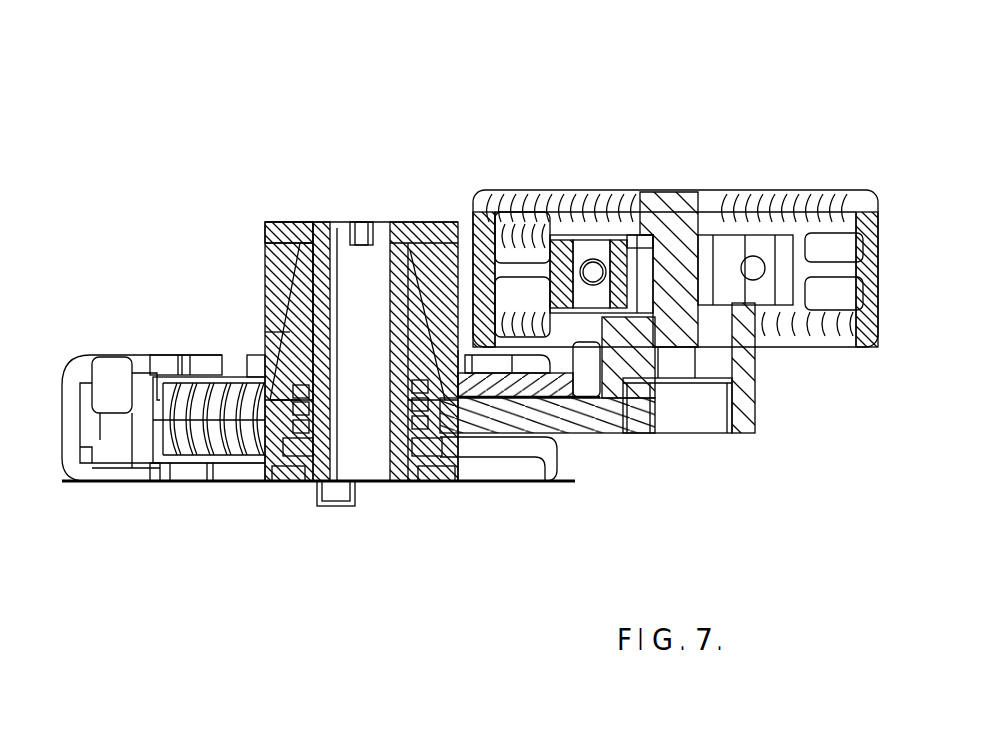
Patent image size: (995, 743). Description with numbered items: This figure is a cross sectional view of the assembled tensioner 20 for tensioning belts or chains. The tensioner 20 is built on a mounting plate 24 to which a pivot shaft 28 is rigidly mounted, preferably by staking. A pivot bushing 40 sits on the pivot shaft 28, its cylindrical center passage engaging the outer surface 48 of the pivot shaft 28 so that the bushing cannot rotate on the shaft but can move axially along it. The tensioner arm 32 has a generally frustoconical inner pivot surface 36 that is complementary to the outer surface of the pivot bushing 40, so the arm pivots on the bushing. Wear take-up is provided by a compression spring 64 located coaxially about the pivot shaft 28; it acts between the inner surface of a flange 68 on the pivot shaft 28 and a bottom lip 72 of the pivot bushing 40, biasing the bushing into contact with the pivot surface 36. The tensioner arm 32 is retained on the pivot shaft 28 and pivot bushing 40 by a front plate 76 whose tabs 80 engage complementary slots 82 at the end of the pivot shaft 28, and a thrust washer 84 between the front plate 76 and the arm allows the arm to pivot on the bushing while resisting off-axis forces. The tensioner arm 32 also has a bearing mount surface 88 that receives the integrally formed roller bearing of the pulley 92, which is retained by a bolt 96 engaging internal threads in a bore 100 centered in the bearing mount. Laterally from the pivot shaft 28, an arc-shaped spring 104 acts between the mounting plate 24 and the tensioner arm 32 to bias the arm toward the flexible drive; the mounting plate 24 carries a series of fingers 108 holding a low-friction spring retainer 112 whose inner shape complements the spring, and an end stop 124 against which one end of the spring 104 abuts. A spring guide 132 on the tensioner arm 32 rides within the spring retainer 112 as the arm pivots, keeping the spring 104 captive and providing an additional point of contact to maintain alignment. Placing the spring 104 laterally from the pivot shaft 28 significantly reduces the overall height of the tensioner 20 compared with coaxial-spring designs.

The tensioner 20 is at (203, 112).
The mounting plate 24 is at (184, 488).
The pivot shaft 28 is at (396, 465).
The tensioner arm 32 is at (588, 423).
The inner pivot surface 36 is at (290, 297).
The pivot bushing 40 is at (290, 268).
The outer surface of pivot shaft 48 is at (290, 330).
The compression spring 64 is at (290, 440).
The flange 68 is at (290, 440).
The bottom lip 72 is at (407, 480).
The front plate 76 is at (265, 222).
The tabs 80 is at (360, 222).
The slots 82 is at (340, 240).
The thrust washer 84 is at (425, 245).
The bearing mount surface 88 is at (765, 355).
The pulley 92 is at (872, 193).
The bolt 96 is at (685, 193).
The bore 100 is at (612, 193).
The arc-shaped spring 104 is at (150, 488).
The fingers 108 is at (82, 357).
The spring retainer 112 is at (218, 488).
The end stop 124 is at (120, 442).
The spring guide 132 is at (568, 450).